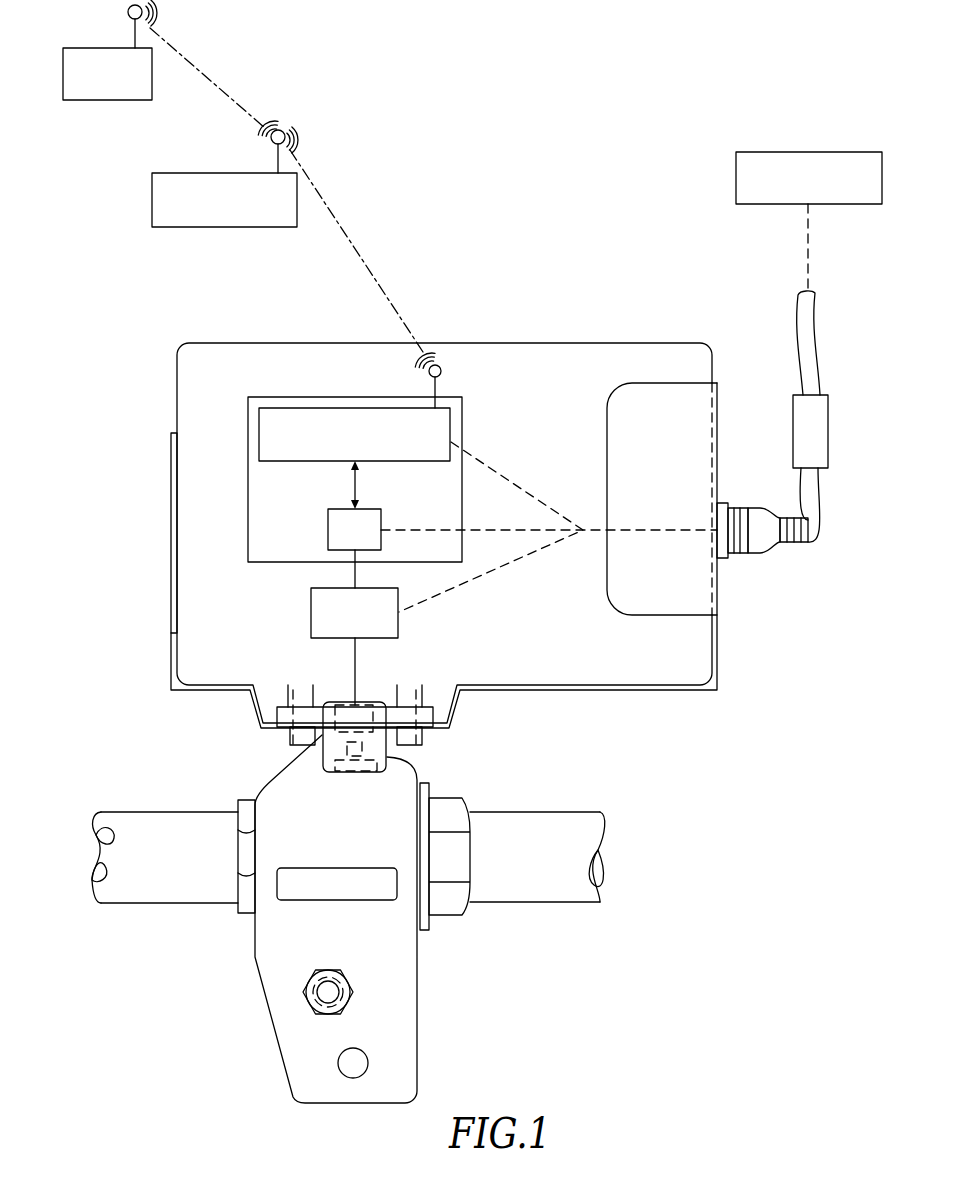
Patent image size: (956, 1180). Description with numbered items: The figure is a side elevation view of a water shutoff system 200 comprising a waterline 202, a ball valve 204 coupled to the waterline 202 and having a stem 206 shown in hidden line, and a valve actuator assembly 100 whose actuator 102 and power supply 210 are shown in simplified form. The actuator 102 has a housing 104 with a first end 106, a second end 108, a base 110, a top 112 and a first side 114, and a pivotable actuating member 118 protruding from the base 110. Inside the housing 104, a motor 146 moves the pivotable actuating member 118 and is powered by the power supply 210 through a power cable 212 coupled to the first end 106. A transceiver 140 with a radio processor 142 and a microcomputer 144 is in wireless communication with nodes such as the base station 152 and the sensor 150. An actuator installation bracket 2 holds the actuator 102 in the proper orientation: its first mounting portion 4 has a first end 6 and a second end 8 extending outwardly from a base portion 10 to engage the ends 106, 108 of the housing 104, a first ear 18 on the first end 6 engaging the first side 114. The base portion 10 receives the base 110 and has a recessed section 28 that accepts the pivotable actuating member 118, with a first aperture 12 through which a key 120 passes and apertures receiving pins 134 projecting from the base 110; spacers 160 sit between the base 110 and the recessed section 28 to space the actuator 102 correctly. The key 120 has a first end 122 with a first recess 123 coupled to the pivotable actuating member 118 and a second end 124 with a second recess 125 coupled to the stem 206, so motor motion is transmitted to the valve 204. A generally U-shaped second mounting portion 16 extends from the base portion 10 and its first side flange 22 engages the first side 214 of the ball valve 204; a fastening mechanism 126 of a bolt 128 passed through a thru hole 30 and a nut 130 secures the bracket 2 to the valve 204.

The actuator installation bracket 2 is at (156, 663).
The first mounting portion 4 is at (712, 706).
The first end 6 is at (717, 585).
The second end 8 is at (177, 515).
The base portion 10 is at (565, 690).
The first aperture 12 is at (412, 756).
The second mounting portion 16 is at (246, 943).
The first ear 18 is at (645, 580).
The first side flange 22 is at (376, 1037).
The recessed section 28 is at (277, 722).
The thru hole 30 is at (330, 970).
The valve actuator assembly 100 is at (134, 473).
The actuator 102 is at (166, 357).
The housing 104 is at (228, 352).
The first end 106 is at (715, 378).
The second end 108 is at (177, 403).
The base 110 is at (210, 690).
The top 112 is at (480, 343).
The first side 114 is at (521, 392).
The pivotable actuating member 118 is at (360, 702).
The key 120 is at (330, 757).
The first end 122 is at (376, 708).
The first recess 123 is at (343, 708).
The second end 124 is at (335, 775).
The second recess 125 is at (353, 786).
The fastening mechanism 126 is at (290, 1005).
The bolt 128 is at (325, 1003).
The nut 130 is at (352, 991).
The pins 134 is at (276, 712).
The transceiver 140 is at (248, 478).
The radio processor 142 is at (283, 408).
The microcomputer 144 is at (380, 509).
The motor 146 is at (311, 608).
The sensor 150 is at (118, 100).
The base station 152 is at (152, 200).
The spacers 160 is at (305, 705).
The water shutoff system 200 is at (223, 1130).
The waterline 202 is at (180, 815).
The ball valve 204 is at (449, 946).
The stem 206 is at (387, 770).
The power supply 210 is at (764, 152).
The power cable 212 is at (815, 530).
The first side 214 is at (335, 876).